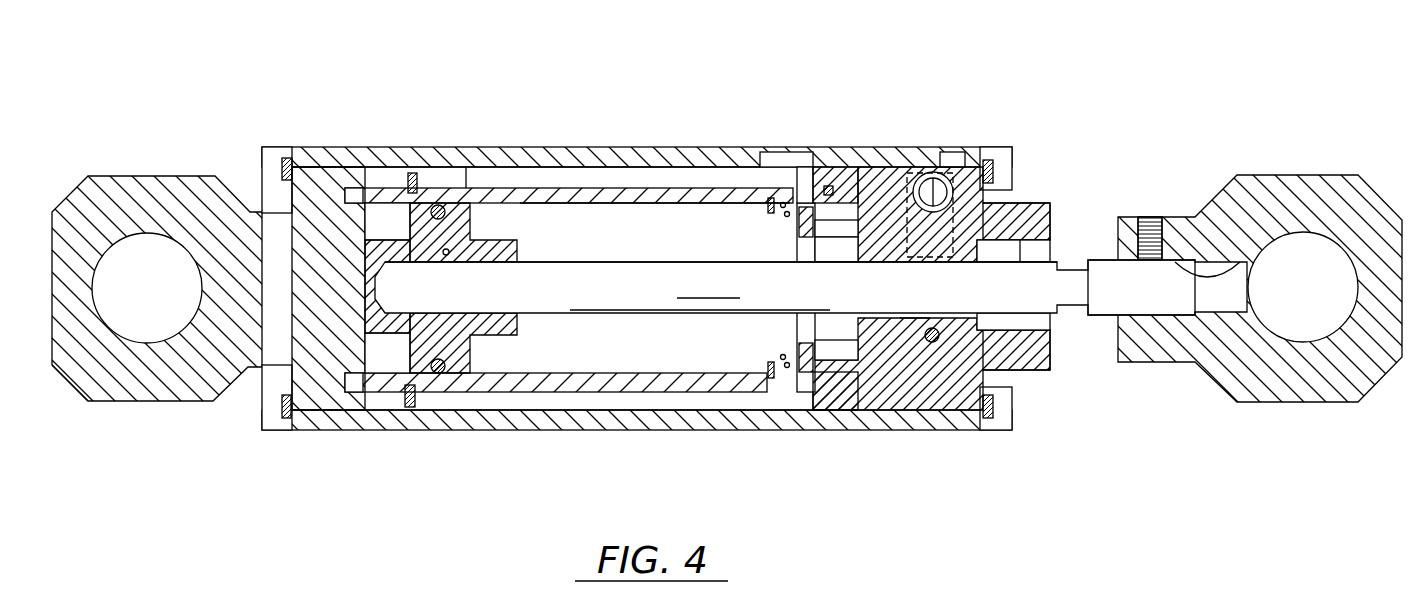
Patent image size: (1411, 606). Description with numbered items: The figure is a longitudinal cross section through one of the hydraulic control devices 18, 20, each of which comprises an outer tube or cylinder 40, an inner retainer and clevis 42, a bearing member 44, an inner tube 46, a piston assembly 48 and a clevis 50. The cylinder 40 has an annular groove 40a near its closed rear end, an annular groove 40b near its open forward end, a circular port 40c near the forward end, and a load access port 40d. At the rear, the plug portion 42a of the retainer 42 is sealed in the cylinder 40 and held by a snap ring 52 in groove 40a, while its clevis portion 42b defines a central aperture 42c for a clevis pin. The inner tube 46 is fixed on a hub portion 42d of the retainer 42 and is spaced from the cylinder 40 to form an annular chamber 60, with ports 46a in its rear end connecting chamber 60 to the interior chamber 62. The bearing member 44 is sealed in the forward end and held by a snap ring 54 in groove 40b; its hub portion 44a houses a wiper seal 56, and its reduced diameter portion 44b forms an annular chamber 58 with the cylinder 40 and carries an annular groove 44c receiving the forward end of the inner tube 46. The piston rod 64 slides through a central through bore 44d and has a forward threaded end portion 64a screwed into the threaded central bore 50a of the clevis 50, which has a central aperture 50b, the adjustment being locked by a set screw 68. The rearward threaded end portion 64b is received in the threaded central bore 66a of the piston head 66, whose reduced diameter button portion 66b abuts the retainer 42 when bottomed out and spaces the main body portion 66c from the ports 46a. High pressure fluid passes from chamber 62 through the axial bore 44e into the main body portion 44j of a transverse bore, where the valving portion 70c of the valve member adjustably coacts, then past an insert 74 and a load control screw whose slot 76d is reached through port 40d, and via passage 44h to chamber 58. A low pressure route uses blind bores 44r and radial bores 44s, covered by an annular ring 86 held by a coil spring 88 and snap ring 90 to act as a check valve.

The hydraulic control device 18 is at (717, 253).
The hydraulic control device 20 is at (717, 253).
The outer tube or cylinder 40 is at (635, 260).
The annular groove 40a is at (290, 160).
The annular groove 40b is at (995, 170).
The circular port 40c is at (770, 160).
The load access port 40d is at (948, 158).
The inner retainer and clevis 42 is at (147, 266).
The plug portion 42a is at (327, 314).
The clevis portion 42b is at (72, 386).
The central aperture 42c is at (193, 305).
The hub portion 42d is at (412, 172).
The bearing member 44 is at (900, 275).
The hub portion 44a is at (1048, 220).
The reduced diameter portion 44b is at (833, 405).
The annular groove 44c is at (802, 167).
The central through bore 44d is at (840, 268).
The axial bore 44e is at (898, 320).
The passage 44h is at (843, 293).
The main body portion 44j is at (918, 338).
The blind bores 44r is at (832, 225).
The radial bores 44s is at (845, 195).
The inner tube 46 is at (569, 247).
The ports 46a is at (405, 288).
The piston assembly 48 is at (597, 253).
The clevis 50 is at (1260, 255).
The threaded central bore 50a is at (1232, 268).
The central aperture 50b is at (1355, 298).
The snap ring 52 is at (280, 402).
The snap ring 54 is at (995, 408).
The wiper seal 56 is at (1045, 258).
The annular chamber 58 is at (848, 165).
The annular chamber 60 is at (540, 168).
The interior chamber 62 is at (683, 244).
The piston rod 64 is at (816, 293).
The forward threaded end portion 64a is at (1108, 318).
The rearward threaded end portion 64b is at (520, 240).
The piston head 66 is at (464, 288).
The threaded central bore 66a is at (448, 262).
The reduced diameter button portion 66b is at (375, 260).
The main body portion 66c is at (467, 165).
The set screw 68 is at (1150, 217).
The valving portion 70c is at (935, 342).
The insert 74 is at (930, 172).
The slot 76d is at (937, 170).
The annular ring 86 is at (787, 356).
The coil spring 88 is at (785, 364).
The snap ring 90 is at (768, 370).